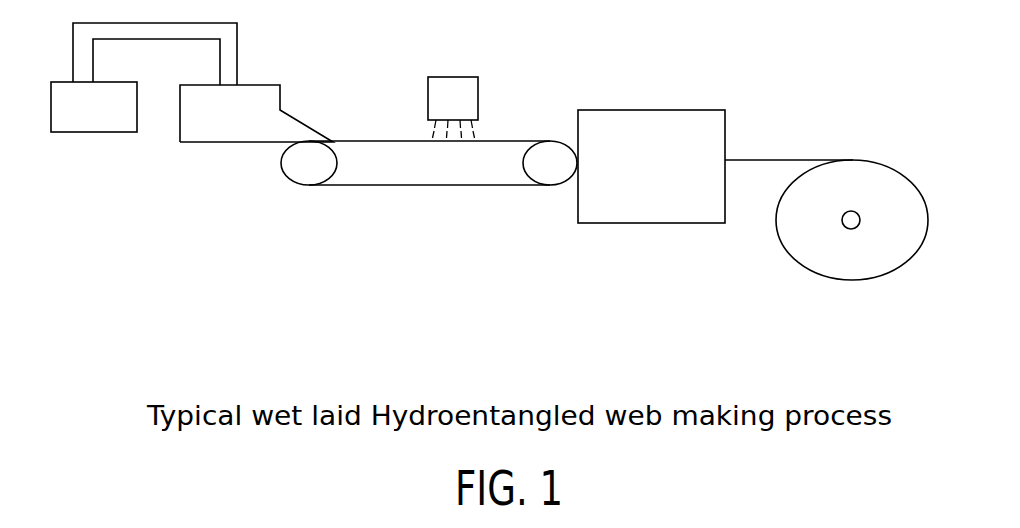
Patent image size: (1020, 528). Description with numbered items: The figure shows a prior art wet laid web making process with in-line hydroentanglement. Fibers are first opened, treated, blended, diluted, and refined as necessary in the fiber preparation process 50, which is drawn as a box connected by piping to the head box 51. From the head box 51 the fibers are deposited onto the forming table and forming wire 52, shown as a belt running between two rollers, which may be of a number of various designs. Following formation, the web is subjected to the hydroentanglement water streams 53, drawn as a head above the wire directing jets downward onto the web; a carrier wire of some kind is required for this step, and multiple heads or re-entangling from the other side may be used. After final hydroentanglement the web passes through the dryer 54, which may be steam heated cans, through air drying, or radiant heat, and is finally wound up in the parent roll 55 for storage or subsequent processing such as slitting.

The fiber preparation process 50 is at (83, 128).
The head box 51 is at (213, 132).
The forming table and forming wire 52 is at (427, 170).
The hydroentanglement water streams 53 is at (450, 83).
The dryer 54 is at (650, 126).
The parent roll 55 is at (817, 258).